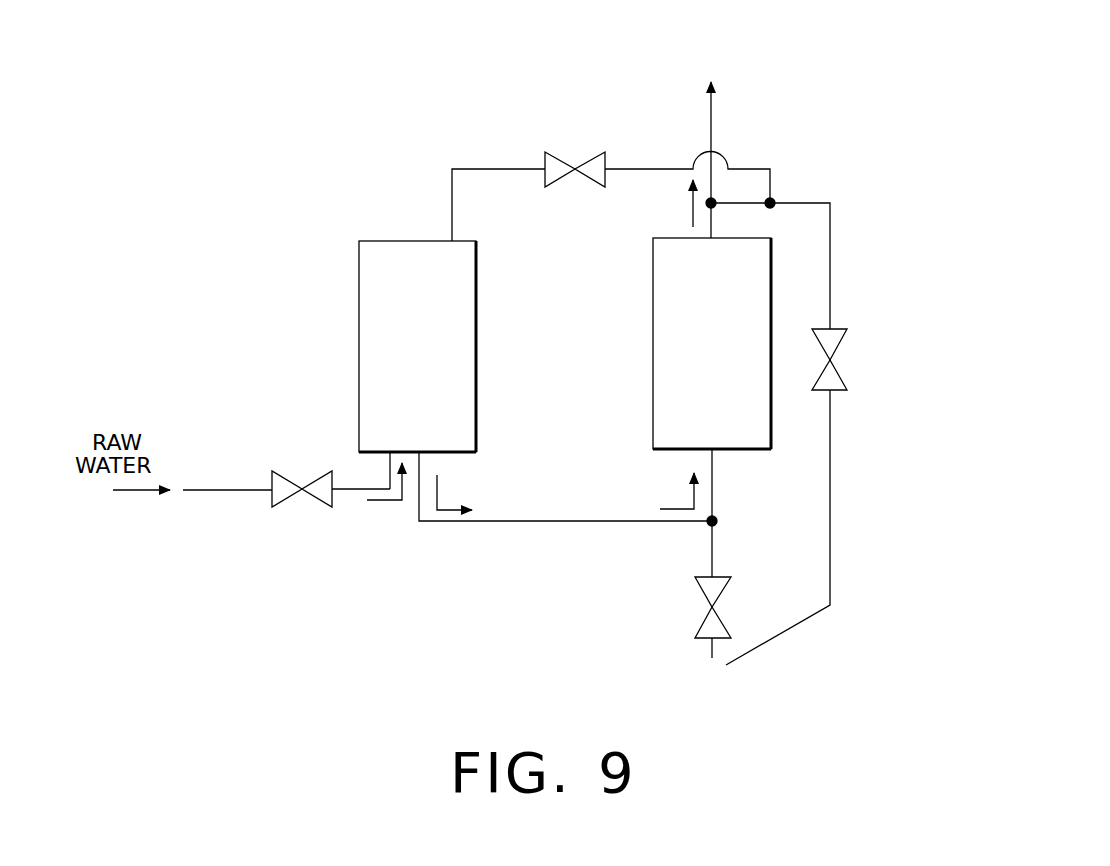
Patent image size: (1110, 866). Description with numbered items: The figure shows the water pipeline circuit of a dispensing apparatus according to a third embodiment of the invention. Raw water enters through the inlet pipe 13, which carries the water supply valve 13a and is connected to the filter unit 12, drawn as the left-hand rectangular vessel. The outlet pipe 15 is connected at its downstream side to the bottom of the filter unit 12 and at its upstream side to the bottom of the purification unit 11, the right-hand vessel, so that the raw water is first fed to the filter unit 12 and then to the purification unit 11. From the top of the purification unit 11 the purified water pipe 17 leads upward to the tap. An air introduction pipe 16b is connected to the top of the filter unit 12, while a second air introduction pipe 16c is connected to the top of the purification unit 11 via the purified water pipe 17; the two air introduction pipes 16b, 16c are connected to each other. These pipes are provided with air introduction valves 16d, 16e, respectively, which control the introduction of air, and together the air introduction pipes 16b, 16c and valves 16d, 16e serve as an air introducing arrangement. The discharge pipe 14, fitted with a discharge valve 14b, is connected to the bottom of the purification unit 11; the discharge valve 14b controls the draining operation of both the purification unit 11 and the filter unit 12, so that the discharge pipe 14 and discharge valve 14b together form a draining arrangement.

The purification unit 11 is at (652, 345).
The filter unit 12 is at (359, 348).
The inlet pipe 13 is at (233, 491).
The water supply valve 13a is at (300, 492).
The discharge pipe 14 is at (712, 546).
The discharge valve 14b is at (710, 607).
The outlet pipe 15 is at (532, 522).
The air introduction pipe 16b is at (496, 169).
The air introduction pipe 16c is at (830, 272).
The air introduction valve 16d is at (575, 169).
The air introduction valve 16e is at (830, 360).
The purified water pipe 17 is at (711, 126).